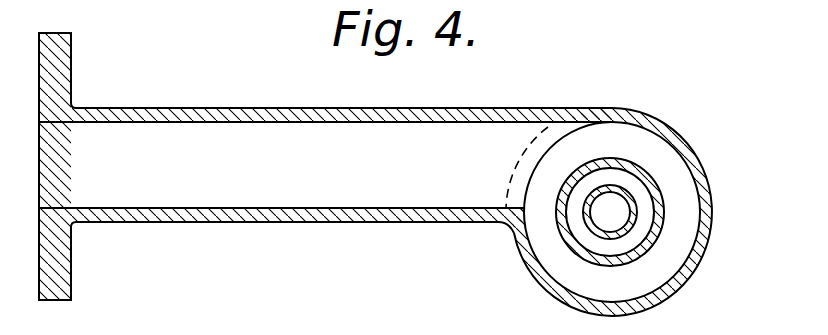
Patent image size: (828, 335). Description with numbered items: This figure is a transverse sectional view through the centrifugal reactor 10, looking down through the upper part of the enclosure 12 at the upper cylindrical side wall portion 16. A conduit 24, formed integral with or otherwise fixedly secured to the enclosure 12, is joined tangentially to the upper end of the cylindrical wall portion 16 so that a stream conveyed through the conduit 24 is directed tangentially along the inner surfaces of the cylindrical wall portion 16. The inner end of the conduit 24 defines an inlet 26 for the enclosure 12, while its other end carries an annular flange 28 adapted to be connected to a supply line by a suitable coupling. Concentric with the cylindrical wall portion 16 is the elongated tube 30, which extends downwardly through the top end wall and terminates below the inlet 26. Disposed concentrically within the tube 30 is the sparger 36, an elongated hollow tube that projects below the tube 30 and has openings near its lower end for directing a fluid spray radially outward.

The centrifugal reactor 10 is at (455, 275).
The enclosure 12 is at (730, 155).
The upper cylindrical side wall portion 16 is at (668, 128).
The conduit 24 is at (163, 222).
The inlet 26 is at (532, 152).
The annular flange 28 is at (65, 57).
The elongated tube 30 is at (657, 240).
The sparger 36 is at (635, 204).